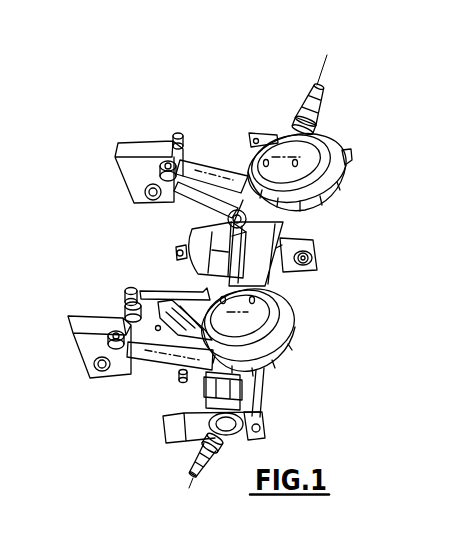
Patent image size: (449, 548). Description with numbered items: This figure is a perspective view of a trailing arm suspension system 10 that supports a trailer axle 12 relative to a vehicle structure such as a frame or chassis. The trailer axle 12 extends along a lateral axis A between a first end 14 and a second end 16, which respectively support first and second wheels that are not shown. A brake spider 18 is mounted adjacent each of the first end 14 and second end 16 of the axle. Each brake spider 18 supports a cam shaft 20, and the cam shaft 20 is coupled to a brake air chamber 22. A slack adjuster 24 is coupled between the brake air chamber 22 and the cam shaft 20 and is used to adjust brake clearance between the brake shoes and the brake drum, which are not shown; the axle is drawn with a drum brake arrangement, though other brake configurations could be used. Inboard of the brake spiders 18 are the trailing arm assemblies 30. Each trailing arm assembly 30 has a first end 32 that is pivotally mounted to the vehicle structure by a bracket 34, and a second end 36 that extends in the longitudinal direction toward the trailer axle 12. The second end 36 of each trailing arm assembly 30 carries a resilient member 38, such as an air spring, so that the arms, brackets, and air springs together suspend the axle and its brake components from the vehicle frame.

The trailing arm suspension system 10 is at (228, 72).
The trailer axle 12 is at (286, 278).
The first axle end 14 is at (188, 466).
The second axle end 16 is at (327, 95).
The brake spider 18 is at (255, 135).
The cam shaft 20 is at (262, 406).
The brake air chamber 22 is at (215, 253).
The slack adjuster 24 is at (315, 253).
The trailing arm assembly 30 is at (169, 104).
The first end 32 is at (201, 168).
The bracket 34 is at (143, 163).
The second end 36 is at (263, 388).
The resilient member 38 is at (330, 188).
The lateral axis A is at (332, 58).